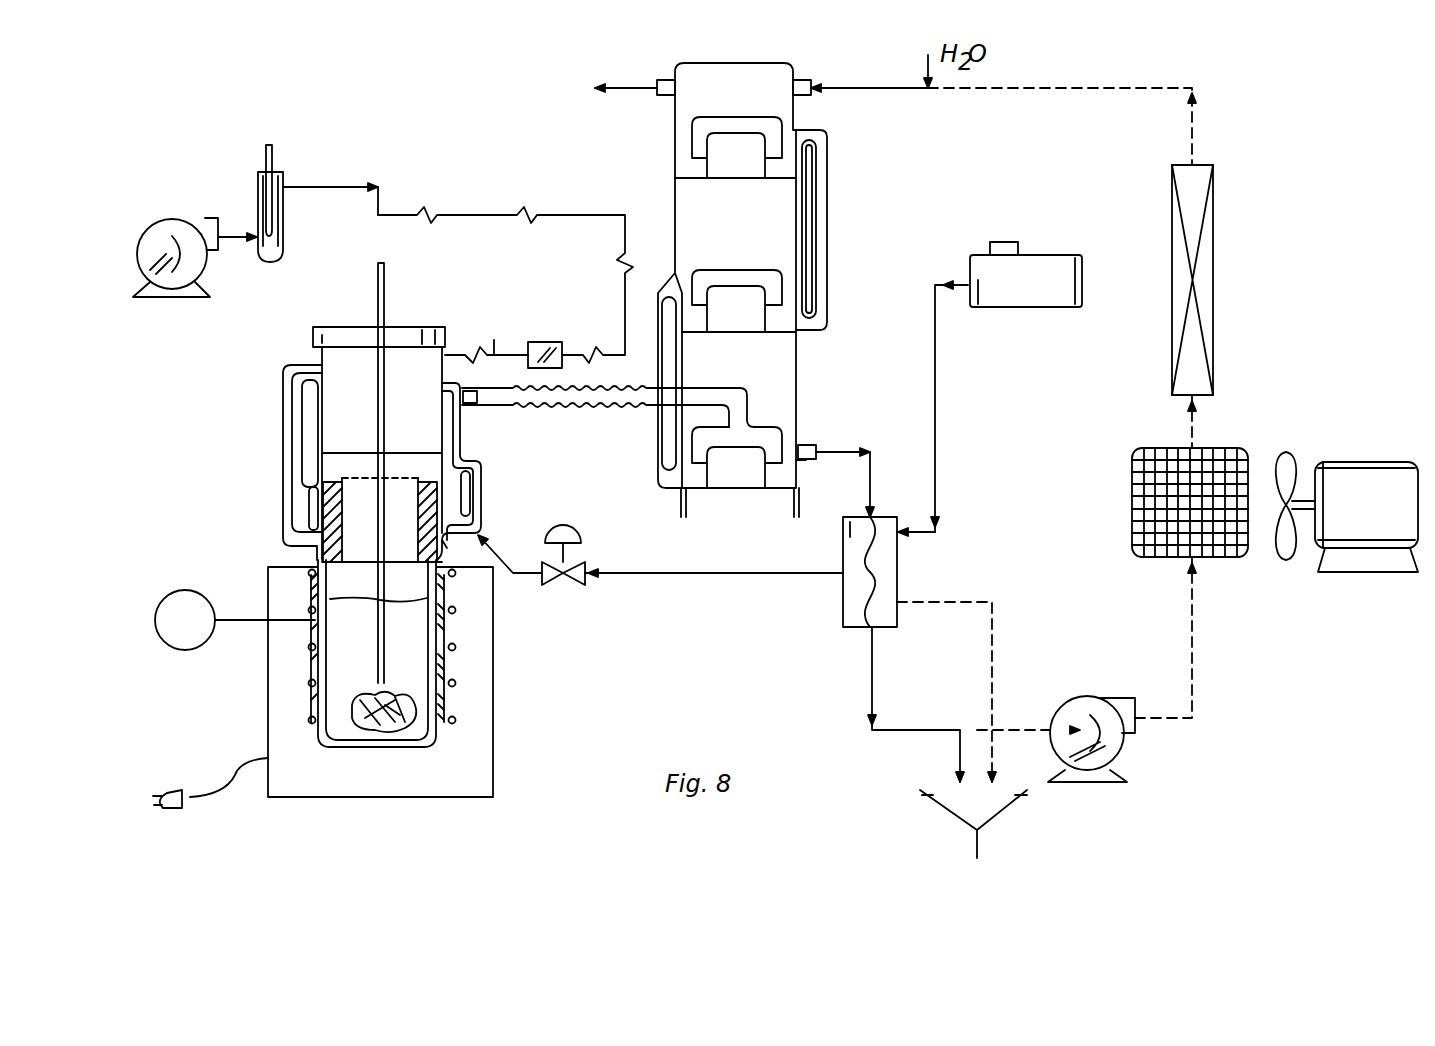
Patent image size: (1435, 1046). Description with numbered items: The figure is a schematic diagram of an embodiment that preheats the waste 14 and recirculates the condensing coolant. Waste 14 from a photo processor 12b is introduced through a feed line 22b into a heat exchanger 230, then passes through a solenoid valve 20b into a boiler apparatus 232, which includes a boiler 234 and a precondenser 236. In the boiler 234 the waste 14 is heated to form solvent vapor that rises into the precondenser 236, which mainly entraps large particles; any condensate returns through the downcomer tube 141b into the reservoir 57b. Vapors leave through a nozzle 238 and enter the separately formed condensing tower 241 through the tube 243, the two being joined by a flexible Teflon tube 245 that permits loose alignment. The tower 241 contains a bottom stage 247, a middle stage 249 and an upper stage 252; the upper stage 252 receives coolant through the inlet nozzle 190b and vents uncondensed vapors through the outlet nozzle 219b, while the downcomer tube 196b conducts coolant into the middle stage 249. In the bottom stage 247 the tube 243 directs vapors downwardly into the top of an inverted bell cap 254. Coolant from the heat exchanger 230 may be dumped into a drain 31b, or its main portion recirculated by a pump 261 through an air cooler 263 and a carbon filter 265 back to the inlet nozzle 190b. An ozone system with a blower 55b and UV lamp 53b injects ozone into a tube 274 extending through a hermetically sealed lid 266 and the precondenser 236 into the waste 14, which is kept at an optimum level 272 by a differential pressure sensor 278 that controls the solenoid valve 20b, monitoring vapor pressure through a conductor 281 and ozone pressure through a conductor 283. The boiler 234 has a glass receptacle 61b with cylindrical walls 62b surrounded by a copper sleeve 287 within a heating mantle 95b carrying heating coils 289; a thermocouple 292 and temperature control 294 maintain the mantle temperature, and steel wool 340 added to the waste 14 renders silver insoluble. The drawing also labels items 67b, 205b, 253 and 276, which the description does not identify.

The photo processor 12b is at (1083, 280).
The waste 14 is at (357, 735).
The solenoid valve 20b is at (567, 585).
The feed line 22b is at (937, 450).
The drain 31b is at (953, 813).
The UV lamp 53b is at (282, 173).
The blower 55b is at (180, 230).
The reservoir 57b is at (410, 722).
The receptacle 61b is at (397, 740).
The cylindrical walls 62b is at (443, 552).
The heater 67b is at (453, 635).
The heating mantle 95b is at (282, 783).
The downcomer tube 141b is at (474, 495).
The inlet nozzle 190b is at (808, 100).
The downcomer tube 196b is at (828, 215).
The condenser outlet 205b is at (812, 462).
The outlet nozzle 219b is at (665, 79).
The heat exchanger 230 is at (843, 624).
The boiler apparatus 232 is at (212, 427).
The boiler 234 is at (226, 586).
The precondenser 236 is at (268, 492).
The nozzle 238 is at (485, 392).
The condensing tower 241 is at (654, 78).
The tube 243 is at (652, 400).
The flexible tube 245 is at (545, 400).
The bottom stage 247 is at (813, 433).
The middle stage 249 is at (847, 278).
The upper stage 252 is at (888, 50).
The condenser chamber 253 is at (650, 295).
The bell cap 254 is at (778, 425).
The pump 261 is at (1097, 703).
The air cooler 263 is at (1118, 458).
The carbon filter 265 is at (1172, 217).
The hermetically sealed lid 266 is at (312, 333).
The level 272 is at (360, 595).
The tube 274 is at (376, 291).
The heating coil 276 is at (343, 507).
The differential pressure sensor 278 is at (543, 342).
The conductor 281 is at (494, 352).
The conductor 283 is at (598, 248).
The sleeve 287 is at (450, 673).
The heating coils 289 is at (458, 718).
The thermocouple 292 is at (315, 622).
The temperature control 294 is at (200, 652).
The steel wool 340 is at (360, 713).